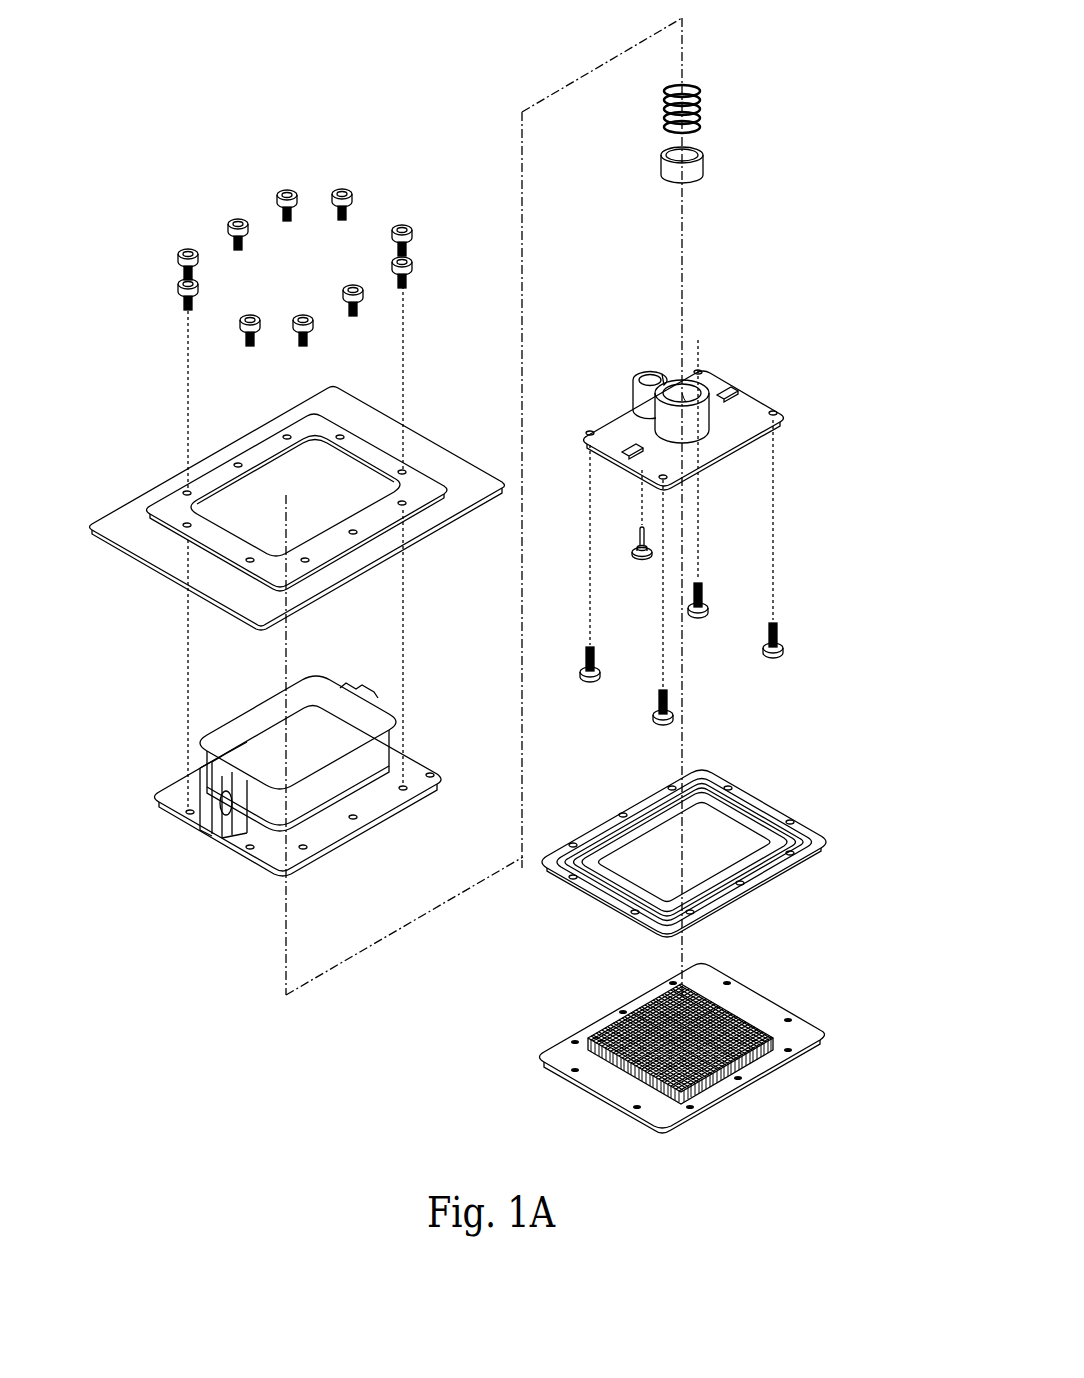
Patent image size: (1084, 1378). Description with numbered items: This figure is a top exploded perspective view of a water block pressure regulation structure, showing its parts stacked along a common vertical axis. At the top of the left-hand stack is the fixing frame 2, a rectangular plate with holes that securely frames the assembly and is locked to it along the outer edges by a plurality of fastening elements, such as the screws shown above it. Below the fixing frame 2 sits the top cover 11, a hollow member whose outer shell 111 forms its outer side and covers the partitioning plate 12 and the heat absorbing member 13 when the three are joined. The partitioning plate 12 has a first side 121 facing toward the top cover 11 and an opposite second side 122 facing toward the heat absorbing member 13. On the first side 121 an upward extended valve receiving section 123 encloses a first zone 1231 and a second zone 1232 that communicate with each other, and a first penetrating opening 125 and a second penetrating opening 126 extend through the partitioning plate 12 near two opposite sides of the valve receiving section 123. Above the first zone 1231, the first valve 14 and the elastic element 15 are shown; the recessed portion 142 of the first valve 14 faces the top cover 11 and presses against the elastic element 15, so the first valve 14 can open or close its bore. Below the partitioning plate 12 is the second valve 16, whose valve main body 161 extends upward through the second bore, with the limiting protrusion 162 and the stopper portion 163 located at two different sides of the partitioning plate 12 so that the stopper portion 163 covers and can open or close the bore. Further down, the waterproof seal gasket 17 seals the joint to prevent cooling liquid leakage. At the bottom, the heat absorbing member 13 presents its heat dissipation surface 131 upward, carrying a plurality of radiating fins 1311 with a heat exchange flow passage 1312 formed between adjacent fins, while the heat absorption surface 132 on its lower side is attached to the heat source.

The fixing frame 2 is at (150, 487).
The top cover 11 is at (242, 762).
The outer shell 111 is at (240, 757).
The partitioning plate 12 is at (729, 401).
The first side 121 is at (770, 412).
The second side 122 is at (740, 450).
The valve receiving section 123 is at (692, 378).
The first zone 1231 is at (701, 370).
The second zone 1232 is at (652, 372).
The first penetrating opening 125 is at (727, 392).
The second penetrating opening 126 is at (588, 440).
The heat absorbing member 13 is at (705, 1049).
The heat dissipation surface 131 is at (614, 1047).
The radiating fins 1311 is at (610, 1022).
The heat exchange flow passage 1312 is at (590, 1040).
The heat absorption surface 132 is at (825, 1040).
The first valve 14 is at (751, 140).
The recessed portion 142 is at (706, 145).
The elastic element 15 is at (702, 97).
The second valve 16 is at (635, 562).
The valve main body 161 is at (648, 532).
The limiting protrusion 162 is at (638, 546).
The stopper portion 163 is at (652, 554).
The waterproof seal gasket 17 is at (758, 795).